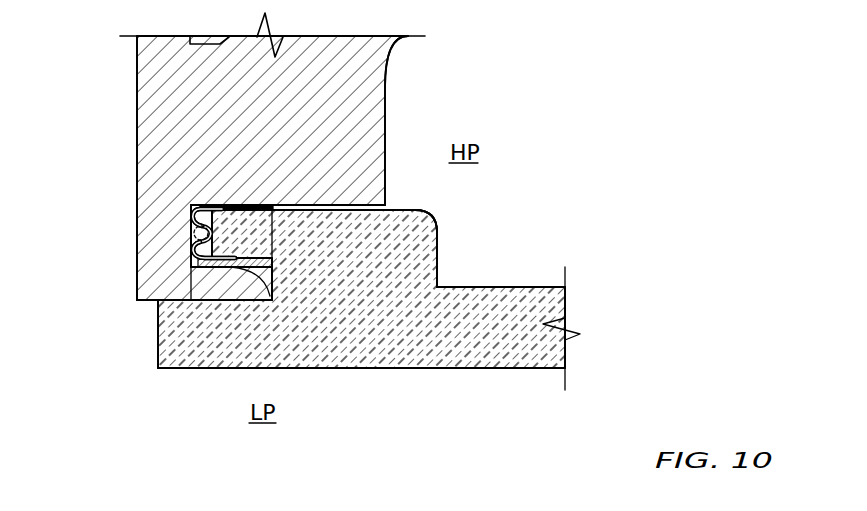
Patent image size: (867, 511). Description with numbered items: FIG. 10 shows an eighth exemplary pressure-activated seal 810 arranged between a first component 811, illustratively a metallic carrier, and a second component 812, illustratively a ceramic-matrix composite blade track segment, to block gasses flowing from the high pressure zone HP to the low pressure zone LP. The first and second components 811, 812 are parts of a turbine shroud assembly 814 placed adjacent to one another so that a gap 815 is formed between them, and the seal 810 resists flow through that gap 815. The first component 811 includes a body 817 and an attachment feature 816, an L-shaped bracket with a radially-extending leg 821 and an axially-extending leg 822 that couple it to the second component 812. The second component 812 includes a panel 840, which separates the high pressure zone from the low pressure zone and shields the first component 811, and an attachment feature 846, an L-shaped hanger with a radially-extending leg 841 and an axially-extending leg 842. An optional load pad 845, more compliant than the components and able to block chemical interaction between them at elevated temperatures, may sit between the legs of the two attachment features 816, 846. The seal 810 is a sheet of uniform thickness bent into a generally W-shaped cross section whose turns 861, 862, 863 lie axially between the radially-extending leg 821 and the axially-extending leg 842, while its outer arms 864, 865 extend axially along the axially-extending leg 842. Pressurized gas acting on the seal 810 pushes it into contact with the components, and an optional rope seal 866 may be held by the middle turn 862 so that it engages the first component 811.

The pressure-activated seal 810 is at (199, 269).
The first component 811 is at (137, 88).
The second component 812 is at (440, 372).
The turbine shroud assembly 814 is at (495, 104).
The gap 815 is at (232, 204).
The attachment feature 816 is at (125, 137).
The body 817 is at (345, 72).
The radially-extending leg 821 is at (160, 200).
The axially-extending leg 822 is at (215, 269).
The panel 840 is at (355, 346).
The radially-extending leg 841 is at (415, 273).
The axially-extending leg 842 is at (388, 226).
The load pad 845 is at (266, 258).
The attachment feature 846 is at (460, 236).
The turn 861 is at (190, 213).
The middle turn 862 is at (206, 217).
The turn 863 is at (190, 253).
The outer arm 864 is at (250, 204).
The outer arm 865 is at (272, 293).
The rope seal 866 is at (196, 237).